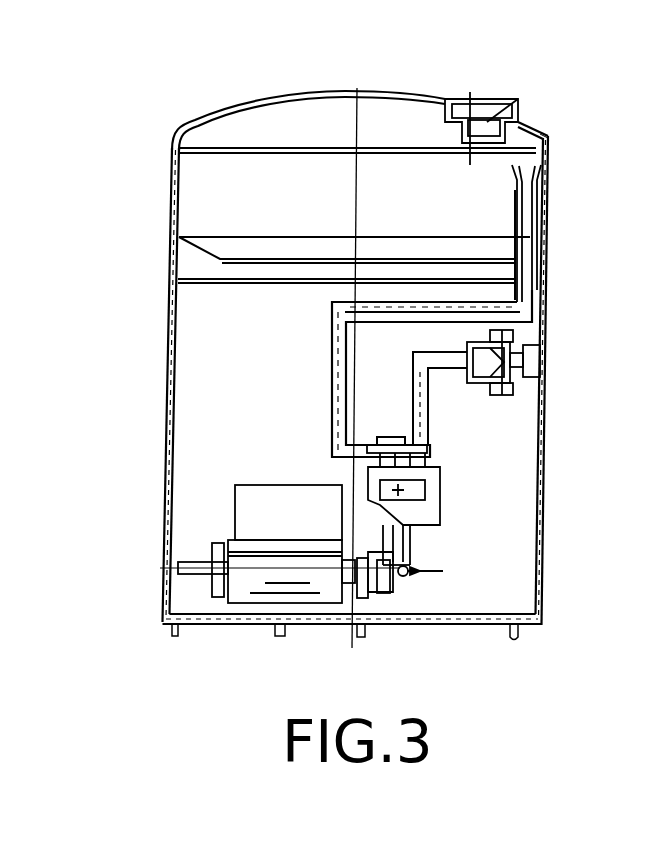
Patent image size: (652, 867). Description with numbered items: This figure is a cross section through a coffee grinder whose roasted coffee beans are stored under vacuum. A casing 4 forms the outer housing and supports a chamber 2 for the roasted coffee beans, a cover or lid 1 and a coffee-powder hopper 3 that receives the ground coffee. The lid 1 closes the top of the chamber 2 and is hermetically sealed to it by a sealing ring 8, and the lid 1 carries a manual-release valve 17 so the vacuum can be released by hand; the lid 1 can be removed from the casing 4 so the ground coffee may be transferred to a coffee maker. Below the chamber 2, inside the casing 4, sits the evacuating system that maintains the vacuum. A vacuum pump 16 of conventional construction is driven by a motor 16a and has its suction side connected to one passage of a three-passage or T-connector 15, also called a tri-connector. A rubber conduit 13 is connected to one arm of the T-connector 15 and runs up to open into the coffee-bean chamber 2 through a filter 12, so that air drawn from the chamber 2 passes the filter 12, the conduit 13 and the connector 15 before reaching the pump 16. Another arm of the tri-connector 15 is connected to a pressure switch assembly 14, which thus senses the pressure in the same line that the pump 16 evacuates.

The cover or lid 1 is at (545, 137).
The chamber 2 is at (545, 222).
The coffee-powder hopper 3 is at (545, 573).
The casing 4 is at (172, 346).
The sealing ring 8 is at (540, 150).
The filter 12 is at (545, 178).
The rubber conduit 13 is at (520, 302).
The pressure switch assembly 14 is at (510, 338).
The three-passage or T-connector 15 is at (430, 440).
The vacuum pump 16 is at (440, 480).
The motor 16a is at (252, 578).
The manual-release valve 17 is at (518, 100).